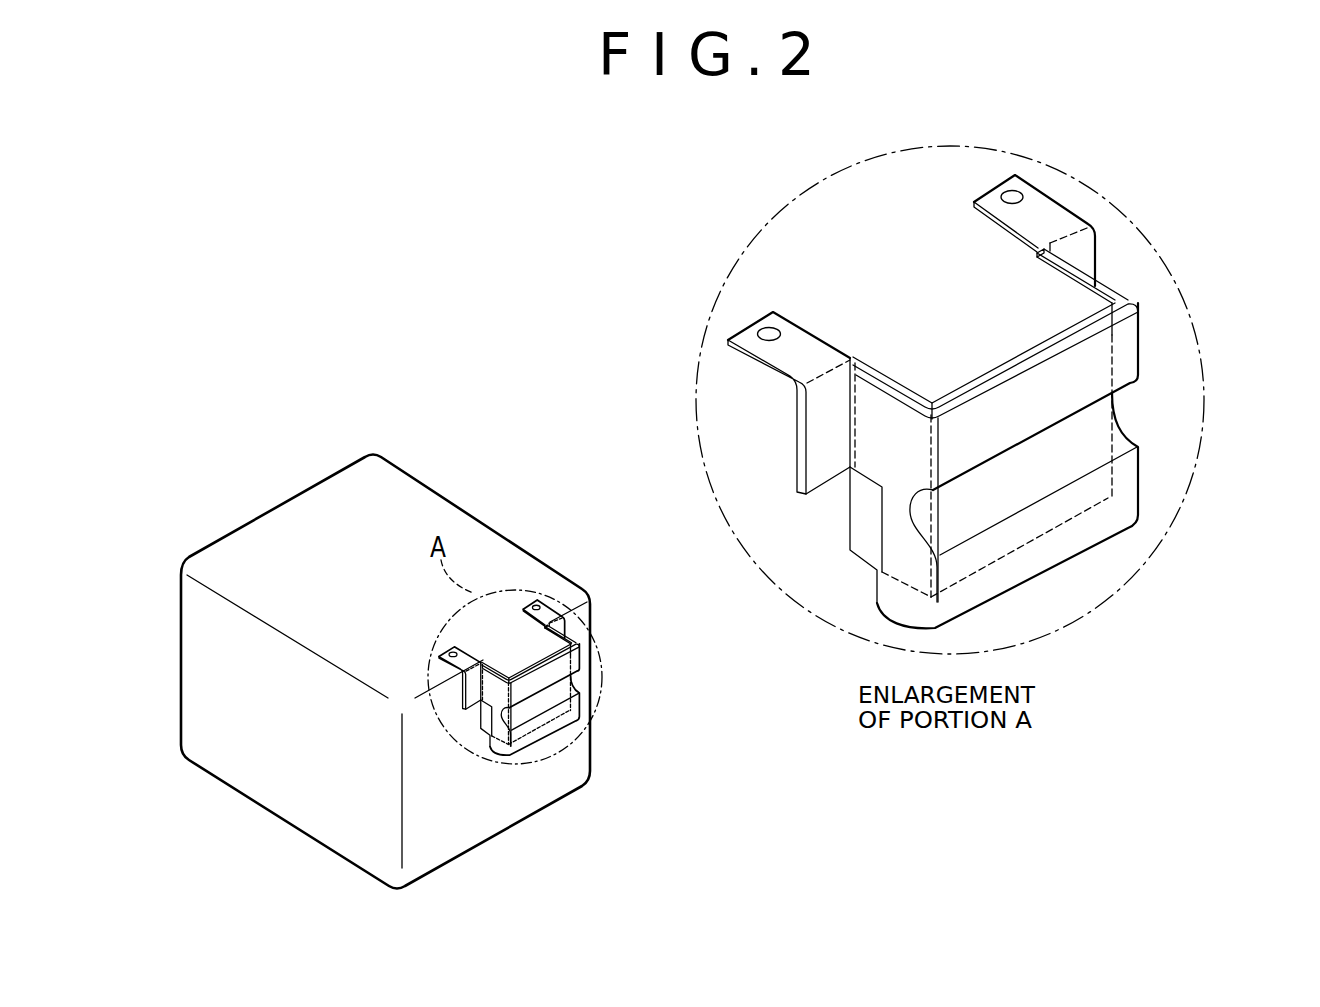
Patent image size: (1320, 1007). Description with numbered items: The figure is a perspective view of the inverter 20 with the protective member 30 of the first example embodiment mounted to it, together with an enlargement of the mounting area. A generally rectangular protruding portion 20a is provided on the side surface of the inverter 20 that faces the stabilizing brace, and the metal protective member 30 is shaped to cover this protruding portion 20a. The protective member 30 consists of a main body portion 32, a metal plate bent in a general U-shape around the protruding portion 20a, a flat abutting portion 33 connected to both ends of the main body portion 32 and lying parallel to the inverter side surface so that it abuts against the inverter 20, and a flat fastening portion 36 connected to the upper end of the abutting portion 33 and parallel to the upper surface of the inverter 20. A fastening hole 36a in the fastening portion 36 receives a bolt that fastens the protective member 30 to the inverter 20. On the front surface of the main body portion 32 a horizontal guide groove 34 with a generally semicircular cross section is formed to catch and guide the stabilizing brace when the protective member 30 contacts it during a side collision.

The inverter 20 is at (402, 483).
The protruding portion 20a is at (1078, 300).
The protective member 30 is at (856, 424).
The main body portion 32 is at (1130, 342).
The abutting portion 33 is at (815, 437).
The guide groove 34 is at (1122, 433).
The fastening portion 36 is at (924, 294).
The fastening hole 36a is at (768, 327).